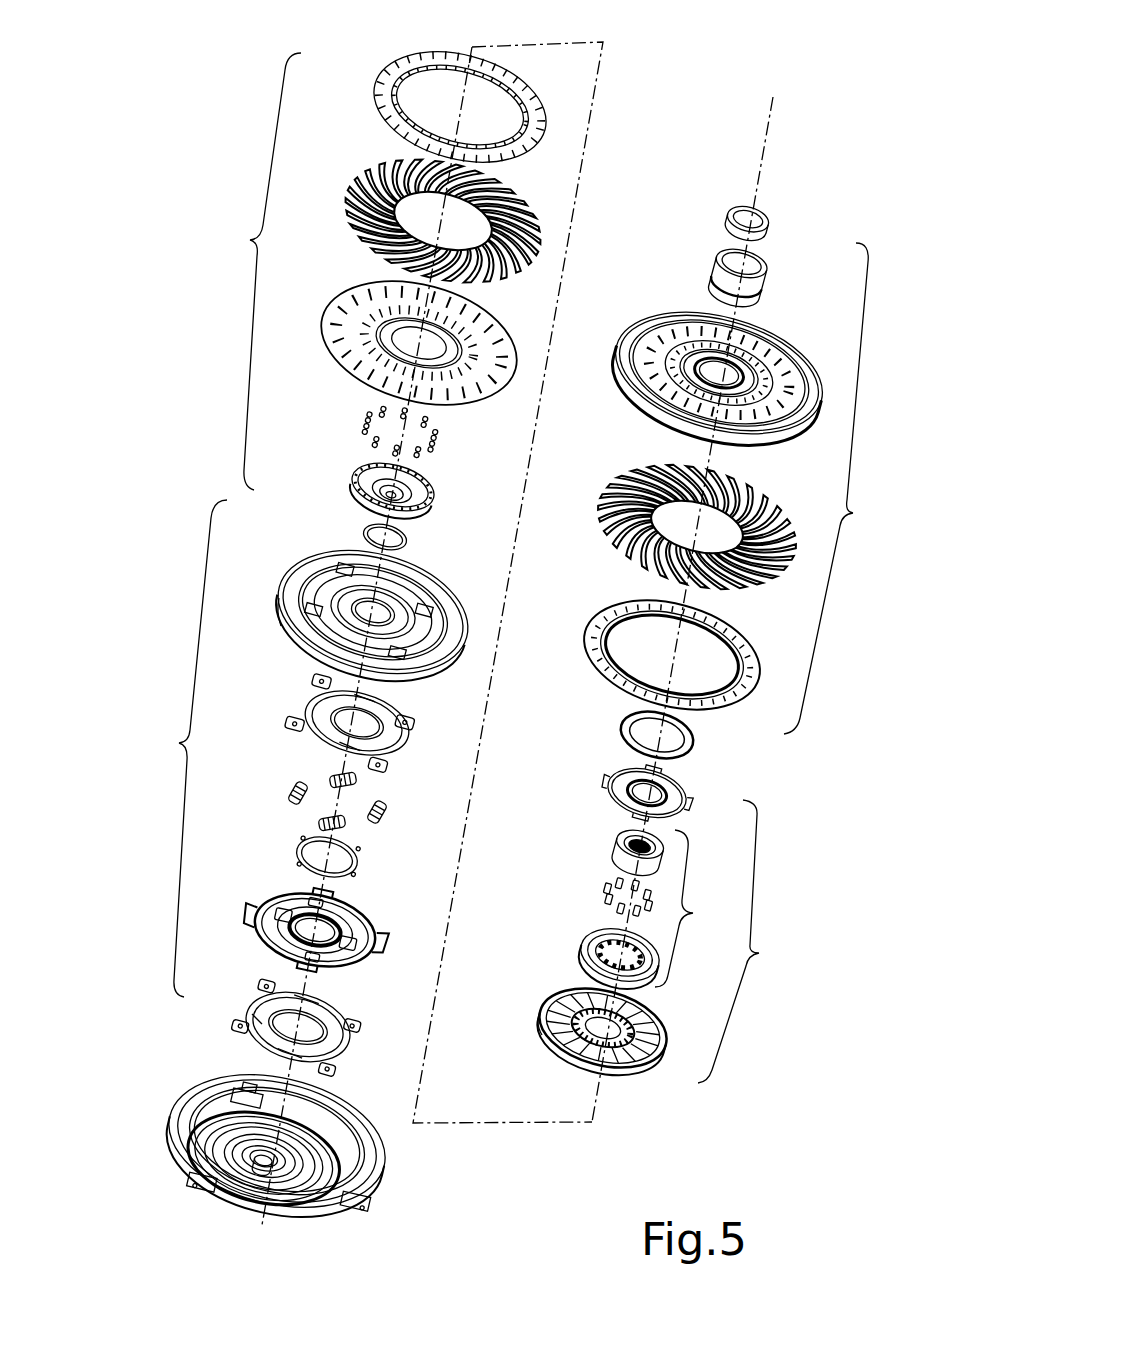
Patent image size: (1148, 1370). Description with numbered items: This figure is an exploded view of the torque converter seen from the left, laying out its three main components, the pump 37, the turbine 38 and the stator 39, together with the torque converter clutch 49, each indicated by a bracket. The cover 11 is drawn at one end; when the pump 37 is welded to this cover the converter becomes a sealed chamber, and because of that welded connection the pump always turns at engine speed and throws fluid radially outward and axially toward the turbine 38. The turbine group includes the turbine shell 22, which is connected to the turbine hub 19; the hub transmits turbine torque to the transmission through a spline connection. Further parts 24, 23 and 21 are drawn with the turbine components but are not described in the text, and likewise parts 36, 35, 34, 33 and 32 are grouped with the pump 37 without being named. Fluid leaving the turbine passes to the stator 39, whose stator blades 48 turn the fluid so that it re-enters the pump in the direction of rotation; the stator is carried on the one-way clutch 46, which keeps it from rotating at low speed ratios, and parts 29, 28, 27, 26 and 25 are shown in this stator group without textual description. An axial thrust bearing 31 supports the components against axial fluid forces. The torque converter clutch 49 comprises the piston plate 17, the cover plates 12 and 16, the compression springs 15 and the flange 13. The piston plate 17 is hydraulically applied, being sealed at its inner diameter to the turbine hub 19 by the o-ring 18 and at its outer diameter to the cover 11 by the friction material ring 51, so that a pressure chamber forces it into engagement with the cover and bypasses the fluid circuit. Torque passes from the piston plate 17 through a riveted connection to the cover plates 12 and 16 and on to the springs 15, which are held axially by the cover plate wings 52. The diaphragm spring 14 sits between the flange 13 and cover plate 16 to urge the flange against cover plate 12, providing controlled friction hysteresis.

The cover 11 is at (198, 1072).
The cover plate 12 is at (237, 988).
The flange 13 is at (248, 898).
The diaphragm spring 14 is at (285, 845).
The compression springs 15 is at (278, 772).
The cover plate 16 is at (278, 693).
The piston plate 17 is at (270, 560).
The o-ring 18 is at (347, 517).
The turbine hub 19 is at (340, 463).
The rivets 21 is at (360, 415).
The turbine shell 22 is at (323, 307).
The turbine blades 23 is at (343, 183).
The turbine core ring 24 is at (362, 92).
The stator 25 is at (530, 997).
The one-way clutch inner race 26 is at (568, 933).
The rollers 27 is at (587, 885).
The bearing 28 is at (600, 830).
The thrust washer 29 is at (600, 775).
The axial thrust bearings 31 is at (607, 710).
The impeller core ring 32 is at (590, 602).
The impeller blades 33 is at (605, 465).
The impeller shell 34 is at (635, 313).
The impeller hub 35 is at (698, 262).
The bushing 36 is at (717, 200).
The pump 37 is at (843, 488).
The turbine 38 is at (254, 271).
The stator 39 is at (756, 941).
The one-way clutch 46 is at (703, 908).
The stator blades 48 is at (540, 1025).
The torque converter clutch 49 is at (181, 748).
The friction material ring 51 is at (280, 612).
The cover plate wings 52 is at (253, 1020).